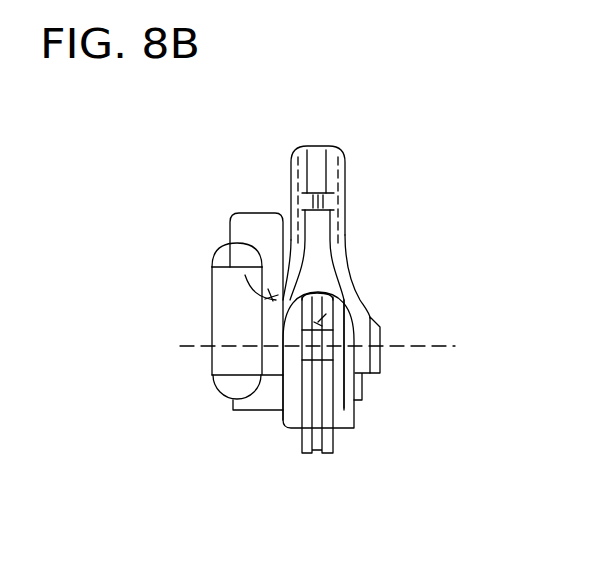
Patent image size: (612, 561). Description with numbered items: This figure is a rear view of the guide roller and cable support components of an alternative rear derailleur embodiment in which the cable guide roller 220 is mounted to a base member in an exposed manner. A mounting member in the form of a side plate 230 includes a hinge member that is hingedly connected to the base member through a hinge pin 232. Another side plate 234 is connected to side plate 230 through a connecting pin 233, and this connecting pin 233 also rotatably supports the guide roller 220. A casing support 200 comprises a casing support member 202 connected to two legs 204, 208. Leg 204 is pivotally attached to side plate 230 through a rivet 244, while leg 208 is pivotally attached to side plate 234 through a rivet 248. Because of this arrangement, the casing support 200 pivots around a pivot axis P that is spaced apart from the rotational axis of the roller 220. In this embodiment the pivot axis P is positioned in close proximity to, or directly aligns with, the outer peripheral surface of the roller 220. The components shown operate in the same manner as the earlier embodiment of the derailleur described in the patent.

The casing support 200 is at (356, 173).
The casing support member 202 is at (291, 178).
The hinge pin 232 is at (210, 250).
The rivet 244 is at (260, 347).
The leg 204 is at (290, 317).
The side plate 230 is at (280, 417).
The cable guide roller 220 is at (328, 455).
The connecting pin 233 is at (320, 322).
The leg 208 is at (360, 313).
The rivet 248 is at (382, 360).
The side plate 234 is at (342, 413).
The pivot axis P is at (329, 343).